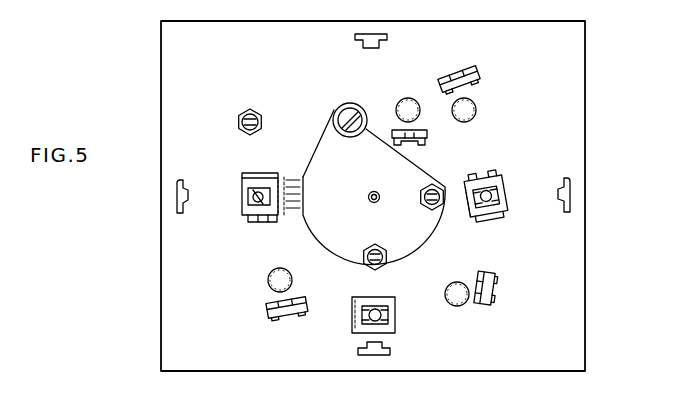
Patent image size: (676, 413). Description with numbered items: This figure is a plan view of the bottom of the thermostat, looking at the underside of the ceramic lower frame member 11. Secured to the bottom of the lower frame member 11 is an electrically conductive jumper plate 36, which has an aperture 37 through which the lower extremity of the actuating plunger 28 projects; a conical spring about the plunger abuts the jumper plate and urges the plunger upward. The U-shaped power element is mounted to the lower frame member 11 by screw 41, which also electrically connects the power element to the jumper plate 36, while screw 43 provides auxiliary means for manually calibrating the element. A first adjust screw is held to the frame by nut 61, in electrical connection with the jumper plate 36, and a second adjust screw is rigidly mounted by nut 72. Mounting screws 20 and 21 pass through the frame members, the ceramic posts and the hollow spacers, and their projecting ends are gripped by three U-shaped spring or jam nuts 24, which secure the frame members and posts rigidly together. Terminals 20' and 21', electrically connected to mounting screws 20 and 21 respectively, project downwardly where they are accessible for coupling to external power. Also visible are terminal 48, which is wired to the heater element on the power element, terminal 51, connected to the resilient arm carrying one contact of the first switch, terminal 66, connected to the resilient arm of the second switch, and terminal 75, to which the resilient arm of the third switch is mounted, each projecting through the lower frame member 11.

The lower frame member 11 is at (585, 98).
The mounting screw 20 is at (243, 208).
The terminal 20' is at (262, 233).
The mounting screw 21 is at (486, 215).
The terminal 21' is at (490, 157).
The U-shaped spring or jam nut 24 is at (242, 195).
The actuating plunger 28 is at (369, 201).
The jumper plate 36 is at (319, 141).
The aperture 37 is at (372, 191).
The screw 41 is at (349, 113).
The screw 43 is at (236, 122).
The terminal 48 is at (410, 140).
The terminal 51 is at (459, 73).
The nut 61 is at (365, 262).
The terminal 66 is at (288, 314).
The nut 72 is at (427, 206).
The terminal 75 is at (491, 287).